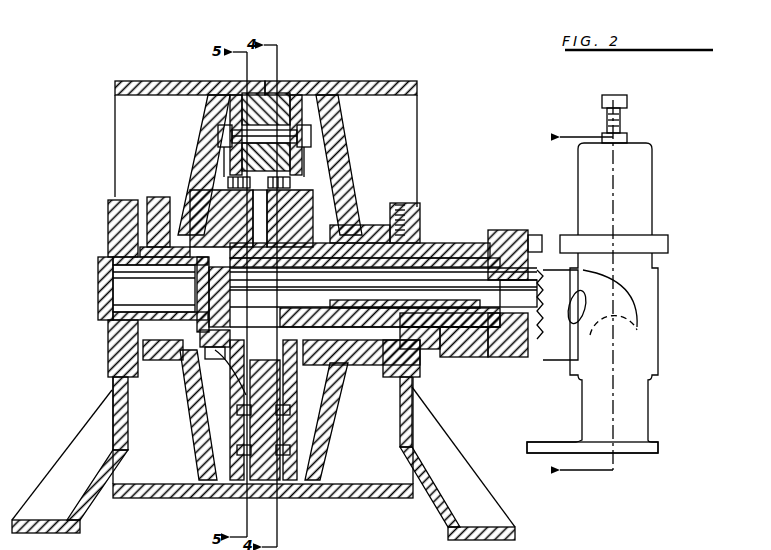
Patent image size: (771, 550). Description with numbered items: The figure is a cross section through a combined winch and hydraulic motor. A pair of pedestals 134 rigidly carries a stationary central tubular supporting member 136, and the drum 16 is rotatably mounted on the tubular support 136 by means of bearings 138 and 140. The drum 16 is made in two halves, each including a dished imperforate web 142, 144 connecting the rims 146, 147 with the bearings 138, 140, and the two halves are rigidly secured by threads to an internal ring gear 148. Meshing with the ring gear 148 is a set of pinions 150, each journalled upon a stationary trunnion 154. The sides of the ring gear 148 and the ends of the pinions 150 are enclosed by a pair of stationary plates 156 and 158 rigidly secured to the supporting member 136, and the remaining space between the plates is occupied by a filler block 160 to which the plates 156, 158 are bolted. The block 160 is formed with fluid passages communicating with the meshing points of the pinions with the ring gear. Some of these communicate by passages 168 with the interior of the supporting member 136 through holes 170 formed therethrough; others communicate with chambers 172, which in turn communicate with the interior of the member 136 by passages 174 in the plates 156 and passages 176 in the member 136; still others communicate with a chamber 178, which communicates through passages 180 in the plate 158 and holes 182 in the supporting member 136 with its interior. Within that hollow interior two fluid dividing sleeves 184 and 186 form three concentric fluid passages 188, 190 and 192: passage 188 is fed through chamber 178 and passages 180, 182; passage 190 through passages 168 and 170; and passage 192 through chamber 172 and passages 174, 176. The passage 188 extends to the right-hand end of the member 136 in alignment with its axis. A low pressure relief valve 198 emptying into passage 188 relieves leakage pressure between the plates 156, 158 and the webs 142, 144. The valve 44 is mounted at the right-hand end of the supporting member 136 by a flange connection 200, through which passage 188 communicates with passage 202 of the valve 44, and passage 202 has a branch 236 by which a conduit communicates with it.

The drum 16 is at (385, 100).
The valve 44 is at (640, 194).
The pedestals 134 is at (83, 458).
The tubular supporting member 136 is at (433, 250).
The bearing 138 is at (398, 208).
The bearing 140 is at (165, 235).
The dished imperforate web 142 is at (325, 158).
The dished imperforate web 144 is at (210, 118).
The rim 146 is at (398, 86).
The rim 147 is at (140, 84).
The internal ring gear 148 is at (281, 128).
The pinions 150 is at (243, 100).
The stationary trunnion 154 is at (282, 136).
The stationary plate 156 is at (300, 160).
The stationary plate 158 is at (233, 160).
The filler block 160 is at (297, 430).
The passages 168 is at (298, 188).
The holes 170 is at (393, 226).
The chambers 172 is at (298, 390).
The passages 174 is at (320, 352).
The passages 176 is at (322, 322).
The chamber 178 is at (253, 393).
The passages 180 is at (213, 370).
The holes 182 is at (220, 327).
The fluid dividing sleeve 184 is at (512, 348).
The fluid dividing sleeve 186 is at (482, 338).
The fluid passage 188 is at (270, 330).
The fluid passage 190 is at (437, 318).
The fluid passage 192 is at (380, 322).
The low pressure relief valve 198 is at (203, 215).
The flange connection 200 is at (508, 230).
The passage 202 is at (526, 312).
The branch 236 is at (545, 426).